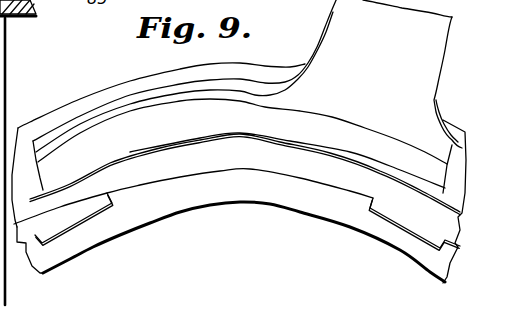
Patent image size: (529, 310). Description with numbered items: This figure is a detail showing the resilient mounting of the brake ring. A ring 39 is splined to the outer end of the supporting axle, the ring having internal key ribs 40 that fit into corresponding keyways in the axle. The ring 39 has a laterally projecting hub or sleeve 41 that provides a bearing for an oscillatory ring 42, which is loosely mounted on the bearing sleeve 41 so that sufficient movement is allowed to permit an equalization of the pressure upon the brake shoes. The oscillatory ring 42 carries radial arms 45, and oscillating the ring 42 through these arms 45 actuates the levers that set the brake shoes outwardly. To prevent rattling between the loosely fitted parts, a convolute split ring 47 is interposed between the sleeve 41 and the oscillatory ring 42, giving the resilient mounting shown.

The ring 39 is at (45, 122).
The internal key ribs 40 is at (73, 217).
The hub or sleeve 41 is at (158, 170).
The oscillatory ring 42 is at (177, 122).
The radial arms 45 is at (414, 141).
The convolute split ring 47 is at (254, 134).